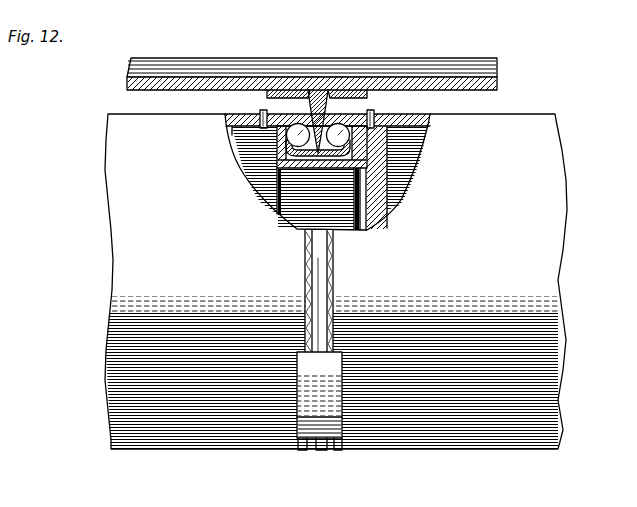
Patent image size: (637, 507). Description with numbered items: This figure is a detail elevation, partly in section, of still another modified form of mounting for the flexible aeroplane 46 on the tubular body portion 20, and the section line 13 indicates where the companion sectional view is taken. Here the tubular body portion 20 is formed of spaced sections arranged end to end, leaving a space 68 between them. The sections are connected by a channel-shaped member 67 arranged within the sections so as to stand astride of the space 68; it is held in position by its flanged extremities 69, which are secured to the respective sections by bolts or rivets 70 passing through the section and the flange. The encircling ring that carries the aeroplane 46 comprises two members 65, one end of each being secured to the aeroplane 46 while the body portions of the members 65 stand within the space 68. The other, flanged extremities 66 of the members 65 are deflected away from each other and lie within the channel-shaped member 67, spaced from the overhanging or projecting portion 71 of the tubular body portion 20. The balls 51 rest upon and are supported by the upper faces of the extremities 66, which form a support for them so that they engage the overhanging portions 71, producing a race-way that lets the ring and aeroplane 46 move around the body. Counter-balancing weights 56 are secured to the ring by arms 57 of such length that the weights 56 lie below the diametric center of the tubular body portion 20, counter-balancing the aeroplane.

The section line 13 is at (349, 470).
The tubular body portion 20 is at (558, 153).
The aeroplane 46 is at (219, 81).
The balls 51 is at (270, 166).
The counter-balancing weights 56 is at (315, 392).
The arms 57 is at (320, 274).
The members of the encircling ring 65 is at (324, 93).
The flanged extremities 66 is at (292, 166).
The channel-shaped member 67 is at (262, 184).
The space 68 is at (298, 122).
The flanged extremities 69 is at (250, 143).
The bolts or rivets 70 is at (228, 113).
The overhanging or projecting portion 71 is at (268, 161).